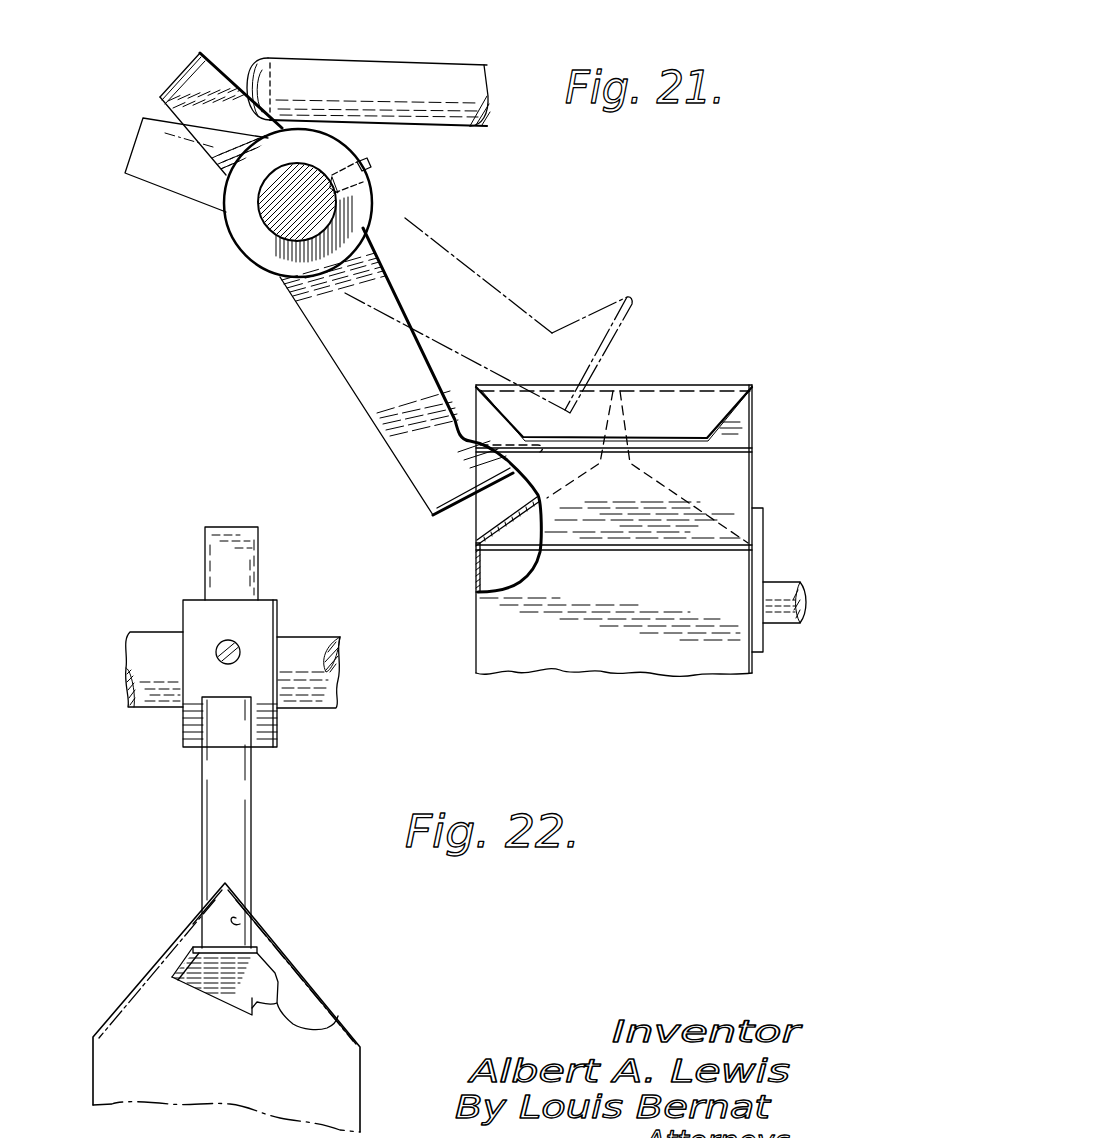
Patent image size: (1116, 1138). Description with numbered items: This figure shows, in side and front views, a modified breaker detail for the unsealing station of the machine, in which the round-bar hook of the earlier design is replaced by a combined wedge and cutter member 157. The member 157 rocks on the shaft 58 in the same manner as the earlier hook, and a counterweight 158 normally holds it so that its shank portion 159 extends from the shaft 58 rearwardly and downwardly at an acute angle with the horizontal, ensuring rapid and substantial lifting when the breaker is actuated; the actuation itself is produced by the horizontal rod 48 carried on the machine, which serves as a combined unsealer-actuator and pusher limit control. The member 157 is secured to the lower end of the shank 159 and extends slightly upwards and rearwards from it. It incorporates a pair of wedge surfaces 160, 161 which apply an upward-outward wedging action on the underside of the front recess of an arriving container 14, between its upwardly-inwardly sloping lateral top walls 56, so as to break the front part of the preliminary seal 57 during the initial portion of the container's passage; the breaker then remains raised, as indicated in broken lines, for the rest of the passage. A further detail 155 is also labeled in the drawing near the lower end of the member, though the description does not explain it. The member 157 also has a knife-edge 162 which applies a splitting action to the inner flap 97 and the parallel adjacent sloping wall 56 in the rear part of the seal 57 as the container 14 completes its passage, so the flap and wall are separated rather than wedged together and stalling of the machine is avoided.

In FIG. 21, the container 14 is at (562, 652).
In FIG. 21, the horizontal rod 48 is at (405, 76).
In FIG. 22, the sloping lateral top wall 56 is at (125, 1009).
In FIG. 21, the preliminary seal 57 is at (700, 397).
In FIG. 22, the preliminary seal 57 is at (193, 932).
In FIG. 21, the shaft 58 is at (273, 228).
In FIG. 22, the shaft 58 is at (330, 693).
In FIG. 22, the inner flap 97 is at (240, 924).
In FIG. 21, the cross section strip 155 is at (495, 513).
In FIG. 21, the combined wedge and cutter member 157 is at (418, 508).
In FIG. 22, the combined wedge and cutter member 157 is at (217, 1003).
In FIG. 21, the counterweight 158 is at (205, 63).
In FIG. 22, the counterweight 158 is at (212, 540).
In FIG. 21, the shank portion 159 is at (373, 392).
In FIG. 22, the shank portion 159 is at (253, 840).
In FIG. 22, the wedge surface 160 is at (182, 962).
In FIG. 22, the wedge surface 161 is at (276, 968).
In FIG. 21, the knife-edge 162 is at (450, 515).
In FIG. 22, the knife-edge 162 is at (338, 1017).